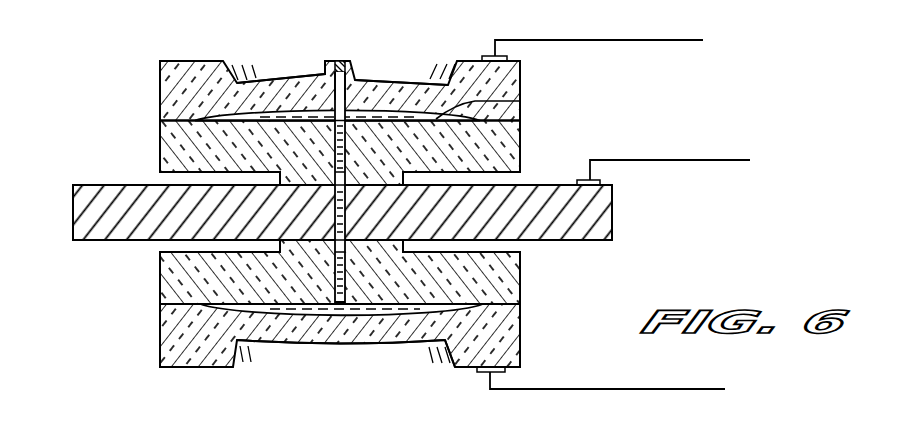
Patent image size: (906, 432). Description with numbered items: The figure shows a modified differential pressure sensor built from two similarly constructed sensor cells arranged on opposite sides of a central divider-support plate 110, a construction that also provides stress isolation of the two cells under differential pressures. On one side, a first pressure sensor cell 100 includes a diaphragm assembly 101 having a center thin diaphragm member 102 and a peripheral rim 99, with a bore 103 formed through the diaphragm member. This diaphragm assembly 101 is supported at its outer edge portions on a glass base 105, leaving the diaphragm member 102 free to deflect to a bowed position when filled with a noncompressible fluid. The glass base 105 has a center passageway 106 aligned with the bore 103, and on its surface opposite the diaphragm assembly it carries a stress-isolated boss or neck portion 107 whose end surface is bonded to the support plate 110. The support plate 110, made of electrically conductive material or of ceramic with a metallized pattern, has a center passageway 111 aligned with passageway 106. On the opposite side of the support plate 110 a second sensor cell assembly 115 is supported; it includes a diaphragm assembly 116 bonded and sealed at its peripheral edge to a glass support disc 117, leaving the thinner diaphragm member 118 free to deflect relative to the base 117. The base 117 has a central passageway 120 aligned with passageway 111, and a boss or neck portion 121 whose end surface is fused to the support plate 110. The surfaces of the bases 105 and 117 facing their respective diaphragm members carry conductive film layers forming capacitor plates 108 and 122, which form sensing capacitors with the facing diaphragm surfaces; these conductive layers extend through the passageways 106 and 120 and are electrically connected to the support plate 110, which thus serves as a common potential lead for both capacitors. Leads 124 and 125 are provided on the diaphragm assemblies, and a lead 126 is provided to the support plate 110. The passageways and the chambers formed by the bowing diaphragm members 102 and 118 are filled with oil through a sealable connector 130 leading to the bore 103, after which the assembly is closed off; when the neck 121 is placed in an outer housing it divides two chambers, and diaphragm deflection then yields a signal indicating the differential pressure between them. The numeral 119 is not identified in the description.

The peripheral rim 99 is at (505, 78).
The first pressure sensor cell 100 is at (315, 97).
The diaphragm assembly 101 is at (197, 72).
The diaphragm member 102 is at (273, 92).
The bore 103 is at (350, 100).
The glass base 105 is at (175, 135).
The passageway 106 is at (391, 133).
The neck portion 107 is at (277, 182).
The capacitor plate 108 is at (487, 104).
The support plate 110 is at (540, 200).
The passageway 111 is at (342, 177).
The second sensor cell assembly 115 is at (313, 320).
The diaphragm assembly 116 is at (500, 331).
The glass support disc 117 is at (500, 271).
The diaphragm member 118 is at (333, 336).
The lower lens recess chamfer 119 is at (477, 355).
The passageway 120 is at (348, 280).
The neck portion 121 is at (277, 246).
The capacitor plate 122 is at (283, 310).
The lead 124 is at (655, 41).
The lead 125 is at (692, 389).
The lead 126 is at (687, 158).
The sealable connector 130 is at (334, 67).